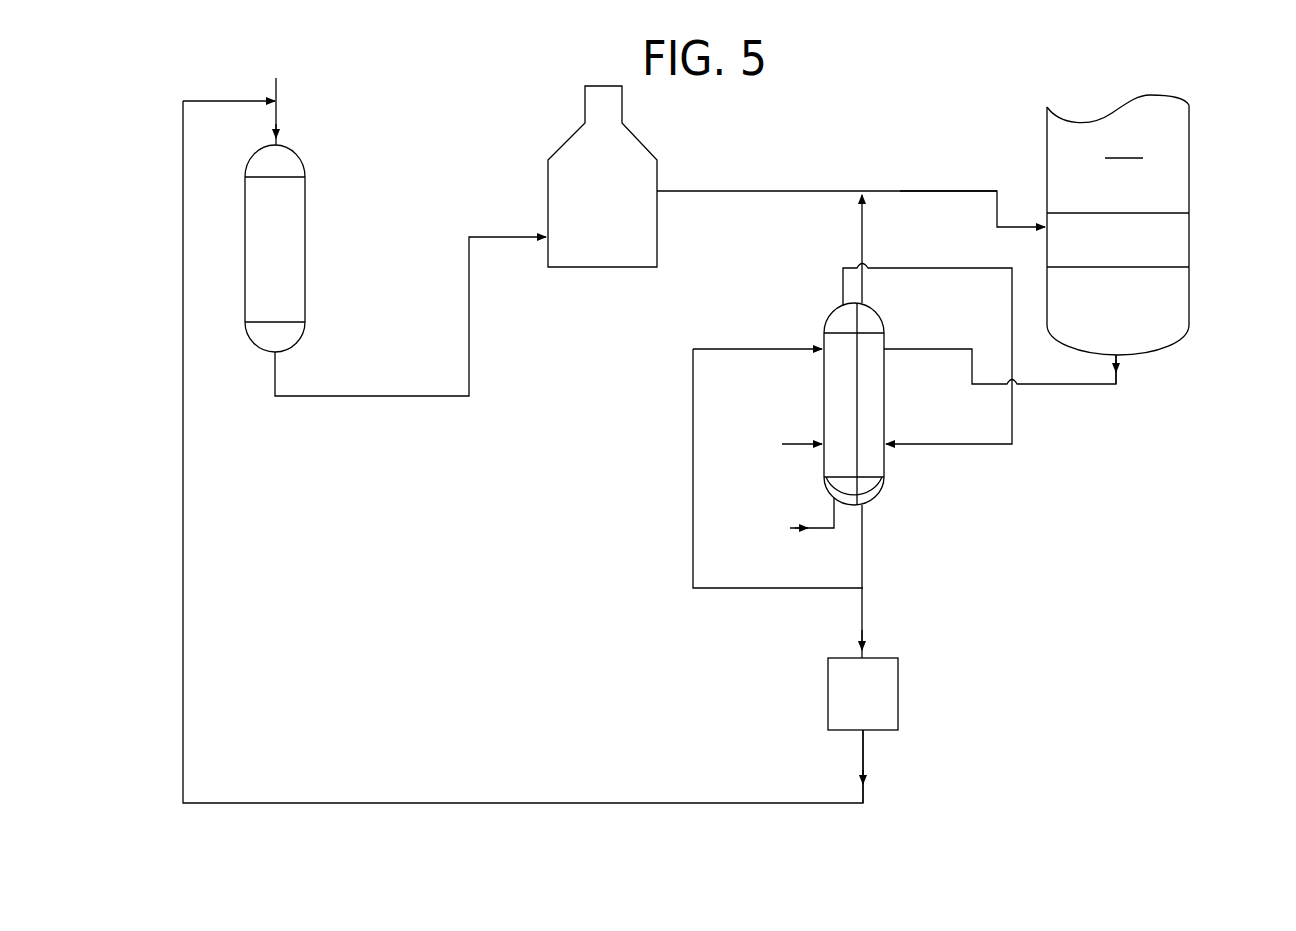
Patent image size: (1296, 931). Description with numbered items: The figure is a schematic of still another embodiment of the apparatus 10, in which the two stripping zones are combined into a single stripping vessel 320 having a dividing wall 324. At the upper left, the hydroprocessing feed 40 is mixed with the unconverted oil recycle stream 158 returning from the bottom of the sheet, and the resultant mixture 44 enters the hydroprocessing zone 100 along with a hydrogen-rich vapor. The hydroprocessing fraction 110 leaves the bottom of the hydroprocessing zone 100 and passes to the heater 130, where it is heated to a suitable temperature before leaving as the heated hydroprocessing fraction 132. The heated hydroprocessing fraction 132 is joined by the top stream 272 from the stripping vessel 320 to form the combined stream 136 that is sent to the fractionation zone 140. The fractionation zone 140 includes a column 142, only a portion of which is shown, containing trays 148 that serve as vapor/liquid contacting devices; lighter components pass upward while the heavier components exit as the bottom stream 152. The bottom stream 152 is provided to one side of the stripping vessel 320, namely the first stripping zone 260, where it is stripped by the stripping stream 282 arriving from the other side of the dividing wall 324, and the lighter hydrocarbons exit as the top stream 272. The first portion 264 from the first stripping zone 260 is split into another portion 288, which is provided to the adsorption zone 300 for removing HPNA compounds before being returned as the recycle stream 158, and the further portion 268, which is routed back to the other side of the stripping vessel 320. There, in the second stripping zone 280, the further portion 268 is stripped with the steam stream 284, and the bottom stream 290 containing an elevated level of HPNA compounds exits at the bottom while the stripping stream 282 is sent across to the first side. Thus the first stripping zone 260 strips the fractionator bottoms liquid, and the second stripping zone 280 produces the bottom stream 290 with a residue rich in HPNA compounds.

The apparatus 10 is at (237, 75).
The hydroprocessing feed 40 is at (280, 92).
The resultant mixture 44 is at (280, 106).
The hydroprocessing zone 100 is at (307, 220).
The hydroprocessing fraction 110 is at (370, 397).
The heater 130 is at (569, 138).
The heated hydroprocessing fraction 132 is at (762, 190).
The combined stream 136 is at (938, 190).
The fractionation zone 140 is at (1190, 150).
The column 142 is at (1125, 146).
The trays 148 is at (1174, 208).
The bottom stream 152 is at (1118, 357).
The recycle stream 158 is at (865, 757).
The first stripping zone 260 is at (865, 466).
The first portion 264 is at (864, 546).
The further portion 268 is at (690, 572).
The top stream 272 is at (866, 238).
The second stripping zone 280 is at (823, 373).
The stripping stream 282 is at (931, 268).
The steam stream 284 is at (790, 442).
The another portion 288 is at (860, 622).
The bottom stream 290 is at (829, 523).
The adsorption zone 300 is at (883, 655).
The stripping vessel 320 is at (827, 320).
The dividing wall 324 is at (858, 455).